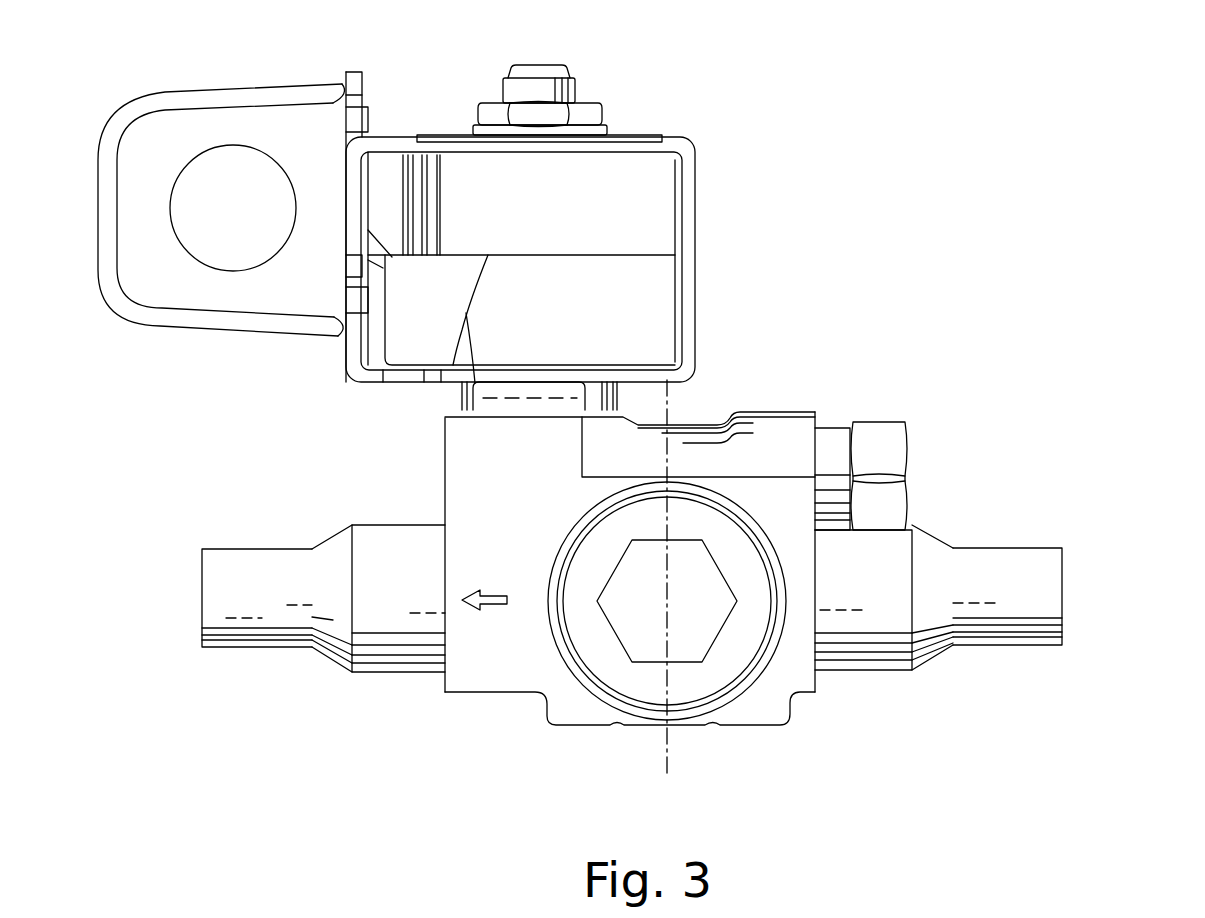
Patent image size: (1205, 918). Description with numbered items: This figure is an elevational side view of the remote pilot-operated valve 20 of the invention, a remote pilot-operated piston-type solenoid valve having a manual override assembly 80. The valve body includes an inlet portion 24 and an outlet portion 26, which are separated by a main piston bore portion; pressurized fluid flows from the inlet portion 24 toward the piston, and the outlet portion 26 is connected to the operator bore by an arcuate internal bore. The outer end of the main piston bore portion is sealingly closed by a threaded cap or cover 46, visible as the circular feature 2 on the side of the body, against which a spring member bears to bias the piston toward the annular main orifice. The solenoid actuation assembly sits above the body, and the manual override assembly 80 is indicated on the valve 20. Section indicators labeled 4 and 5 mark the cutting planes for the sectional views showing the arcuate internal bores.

The remote pilot-operated valve 20 is at (728, 195).
The manual override assembly 80 is at (937, 390).
The valve body boss 2 is at (778, 667).
The threaded cap or cover 46 is at (707, 670).
The inlet portion 24 is at (1035, 572).
The outlet portion 26 is at (256, 620).
The section line 4- 4 is at (667, 410).
The section line 5- 5 is at (462, 398).